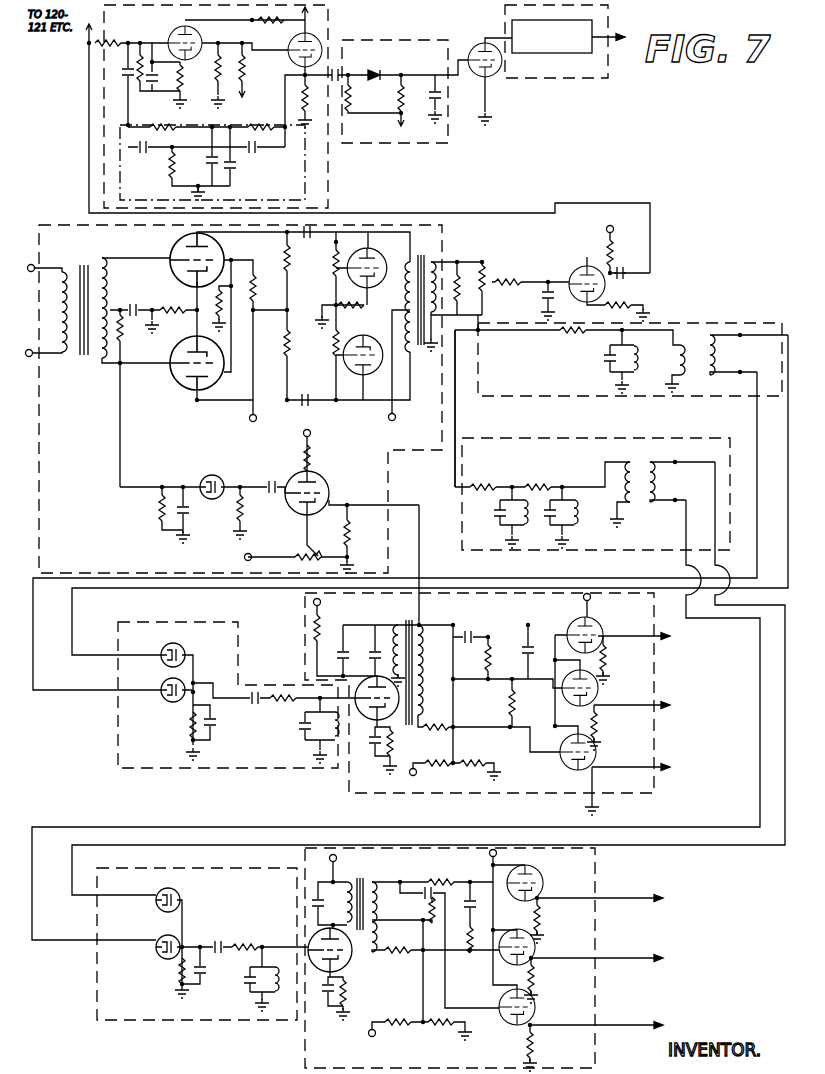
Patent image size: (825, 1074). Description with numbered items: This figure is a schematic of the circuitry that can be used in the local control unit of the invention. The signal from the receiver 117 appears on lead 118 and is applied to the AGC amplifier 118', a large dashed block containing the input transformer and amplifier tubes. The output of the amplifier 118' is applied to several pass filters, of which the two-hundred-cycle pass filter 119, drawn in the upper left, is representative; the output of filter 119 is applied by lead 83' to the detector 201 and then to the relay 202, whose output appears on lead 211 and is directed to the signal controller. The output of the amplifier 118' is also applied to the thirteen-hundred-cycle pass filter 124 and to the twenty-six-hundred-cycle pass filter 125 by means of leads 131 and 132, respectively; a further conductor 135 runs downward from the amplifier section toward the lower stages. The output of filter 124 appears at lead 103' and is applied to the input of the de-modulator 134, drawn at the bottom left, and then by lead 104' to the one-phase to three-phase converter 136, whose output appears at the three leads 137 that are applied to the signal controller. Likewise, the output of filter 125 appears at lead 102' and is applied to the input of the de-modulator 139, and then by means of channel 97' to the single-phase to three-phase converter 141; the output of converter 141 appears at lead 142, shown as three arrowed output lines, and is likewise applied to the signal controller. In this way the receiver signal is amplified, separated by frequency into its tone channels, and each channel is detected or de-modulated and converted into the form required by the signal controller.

The filter 119 is at (104, 93).
The AGC amplifier 118' is at (332, 375).
The receiver 117 is at (61, 308).
The lead 83' is at (353, 48).
The detector 201 is at (424, 42).
The lead 211 is at (612, 37).
The relay 202 is at (572, 80).
The lead 118 is at (474, 266).
The lead 132 is at (480, 328).
The pass filter 125 is at (706, 328).
The lead 102' is at (415, 493).
The pass filter 124 is at (645, 450).
The lead 131 is at (452, 463).
The conductor 135 is at (420, 559).
The lead 103' is at (408, 701).
The de-modulator 139 is at (118, 720).
The channel 97' is at (369, 747).
The lead 142 is at (664, 767).
The single-phase to three-phase converter 141 is at (515, 705).
The lead 104' is at (296, 964).
The de-modulator 134 is at (128, 1022).
The one-phase to three-phase converter 136 is at (444, 959).
The leads 137 is at (666, 1025).